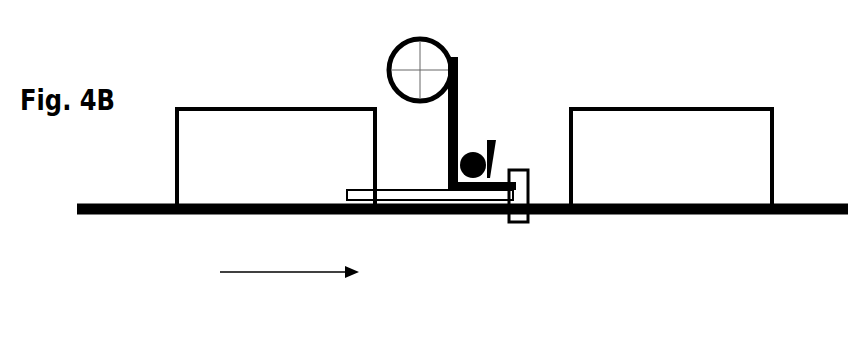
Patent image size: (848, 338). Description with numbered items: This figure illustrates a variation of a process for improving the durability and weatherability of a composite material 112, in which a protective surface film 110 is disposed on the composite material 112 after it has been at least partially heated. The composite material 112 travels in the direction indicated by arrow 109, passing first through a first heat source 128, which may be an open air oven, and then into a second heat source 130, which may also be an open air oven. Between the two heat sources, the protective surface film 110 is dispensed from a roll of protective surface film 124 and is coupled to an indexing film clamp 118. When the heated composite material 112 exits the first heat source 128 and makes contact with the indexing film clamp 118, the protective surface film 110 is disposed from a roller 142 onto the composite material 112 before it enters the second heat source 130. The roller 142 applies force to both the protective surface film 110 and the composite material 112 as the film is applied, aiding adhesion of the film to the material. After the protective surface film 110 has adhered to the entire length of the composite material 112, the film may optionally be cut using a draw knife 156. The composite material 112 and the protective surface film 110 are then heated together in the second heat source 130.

The arrow 109 is at (292, 273).
The protective surface film 110 is at (458, 100).
The composite material 112 is at (430, 188).
The indexing film clamp 118 is at (518, 223).
The roll of protective surface film 124 is at (398, 53).
The first heat source 128 is at (270, 107).
The second heat source 130 is at (668, 107).
The roller 142 is at (469, 153).
The draw knife 156 is at (496, 158).